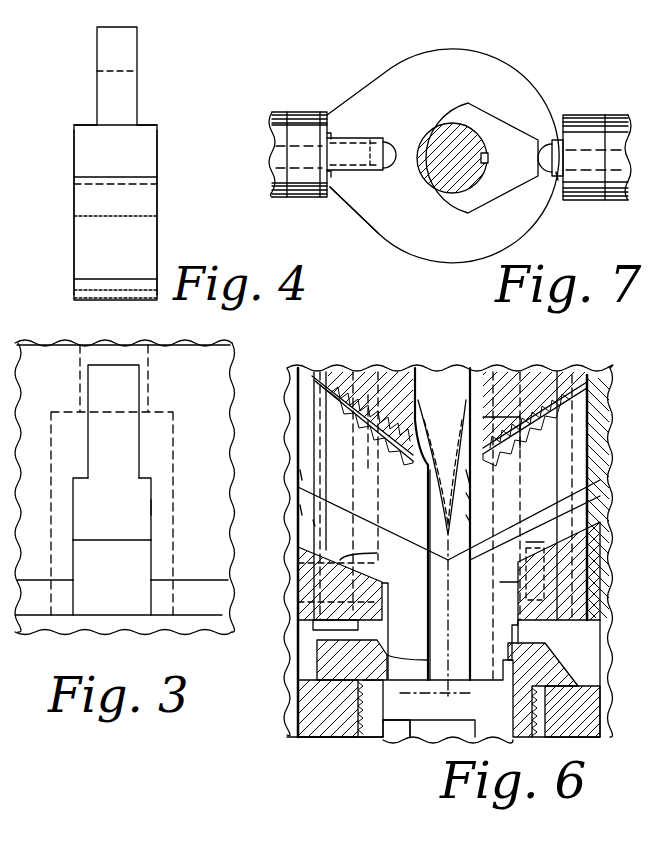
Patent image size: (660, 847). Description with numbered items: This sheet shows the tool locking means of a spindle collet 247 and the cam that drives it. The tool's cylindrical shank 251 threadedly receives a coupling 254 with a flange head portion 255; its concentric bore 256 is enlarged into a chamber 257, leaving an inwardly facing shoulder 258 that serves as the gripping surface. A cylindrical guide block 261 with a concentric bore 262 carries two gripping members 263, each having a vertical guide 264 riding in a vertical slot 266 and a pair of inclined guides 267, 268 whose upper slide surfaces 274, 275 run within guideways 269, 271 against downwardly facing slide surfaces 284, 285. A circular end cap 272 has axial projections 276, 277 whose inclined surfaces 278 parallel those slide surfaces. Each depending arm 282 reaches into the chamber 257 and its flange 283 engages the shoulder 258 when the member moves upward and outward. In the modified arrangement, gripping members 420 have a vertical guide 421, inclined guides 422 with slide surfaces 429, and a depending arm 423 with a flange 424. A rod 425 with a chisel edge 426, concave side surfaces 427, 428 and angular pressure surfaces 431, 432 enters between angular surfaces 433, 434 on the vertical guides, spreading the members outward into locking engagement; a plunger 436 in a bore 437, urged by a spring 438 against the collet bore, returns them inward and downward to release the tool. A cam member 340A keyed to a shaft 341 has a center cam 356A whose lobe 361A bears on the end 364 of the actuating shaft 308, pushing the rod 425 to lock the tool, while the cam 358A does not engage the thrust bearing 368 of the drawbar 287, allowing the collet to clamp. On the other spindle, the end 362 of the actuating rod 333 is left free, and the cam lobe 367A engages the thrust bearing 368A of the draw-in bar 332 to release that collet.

In FIG. 6, the collet 247 is at (292, 633).
In FIG. 6, the cylindrical shank 251 is at (312, 700).
In FIG. 6, the coupling 254 is at (367, 737).
In FIG. 6, the flange head portion 255 is at (322, 653).
In FIG. 6, the bore 256 is at (382, 738).
In FIG. 6, the chamber 257 is at (397, 737).
In FIG. 6, the shoulder 258 is at (370, 662).
In FIG. 3, the guide block 261 is at (192, 379).
In FIG. 6, the guide block 261 is at (419, 368).
In FIG. 3, the bore 262 is at (170, 541).
In FIG. 6, the bore 262 is at (368, 395).
In FIG. 4, the gripping member 263 is at (162, 204).
In FIG. 4, the vertical guide 264 is at (139, 81).
In FIG. 3, the vertical slot 266 is at (133, 434).
In FIG. 6, the vertical slot 266 is at (300, 370).
In FIG. 4, the inclined guide 267 is at (159, 157).
In FIG. 4, the inclined guide 268 is at (74, 146).
In FIG. 3, the guideway 269 is at (149, 508).
In FIG. 6, the guideway 269 is at (538, 545).
In FIG. 3, the guideway 271 is at (72, 518).
In FIG. 6, the guideway 271 is at (300, 510).
In FIG. 3, the end cap 272 is at (33, 603).
In FIG. 6, the end cap 272 is at (563, 622).
In FIG. 4, the inclined slide surface 274 is at (141, 124).
In FIG. 4, the inclined slide surface 275 is at (97, 125).
In FIG. 3, the axial projection 276 is at (82, 565).
In FIG. 6, the axial projection 277 is at (302, 563).
In FIG. 3, the inclined surface 278 is at (93, 539).
In FIG. 6, the inclined surface 278 is at (362, 553).
In FIG. 4, the depending arm 282 is at (74, 243).
In FIG. 4, the flange 283 is at (80, 287).
In FIG. 3, the inclined slide surface 284 is at (148, 484).
In FIG. 3, the inclined slide surface 285 is at (89, 483).
In FIG. 7, the drawbar 287 is at (616, 115).
In FIG. 7, the actuating shaft 308 is at (557, 185).
In FIG. 7, the draw-in bar 332 is at (277, 158).
In FIG. 7, the actuating rod 333 is at (352, 147).
In FIG. 7, the cam member 340A is at (474, 277).
In FIG. 7, the shaft 341 is at (458, 128).
In FIG. 7, the center cam 356A is at (507, 125).
In FIG. 7, the cam 358A is at (390, 238).
In FIG. 7, the cam lobe 361A is at (553, 140).
In FIG. 7, the end of actuating rod 362 is at (383, 172).
In FIG. 7, the end of actuating rod 364 is at (550, 172).
In FIG. 7, the cam lobe 367A is at (331, 188).
In FIG. 7, the thrust bearing 368 is at (584, 190).
In FIG. 7, the thrust bearing 368A is at (324, 96).
In FIG. 6, the gripping member 420 is at (308, 443).
In FIG. 6, the vertical guide 421 is at (315, 427).
In FIG. 6, the inclined guide 422 is at (313, 523).
In FIG. 6, the depending arm 423 is at (419, 586).
In FIG. 6, the flange 424 is at (415, 700).
In FIG. 6, the rod 425 is at (453, 377).
In FIG. 6, the chisel edge 426 is at (467, 518).
In FIG. 6, the concave side surface 427 is at (436, 508).
In FIG. 6, the concave side surface 428 is at (466, 494).
In FIG. 6, the inclined slide surface 429 is at (302, 478).
In FIG. 6, the angular pressure surface 431 is at (418, 426).
In FIG. 6, the angular pressure surface 432 is at (421, 433).
In FIG. 6, the angular surface 433 is at (418, 477).
In FIG. 6, the angular surface 434 is at (466, 478).
In FIG. 6, the plunger 436 is at (302, 398).
In FIG. 6, the bore 437 is at (385, 398).
In FIG. 6, the spring 438 is at (330, 368).